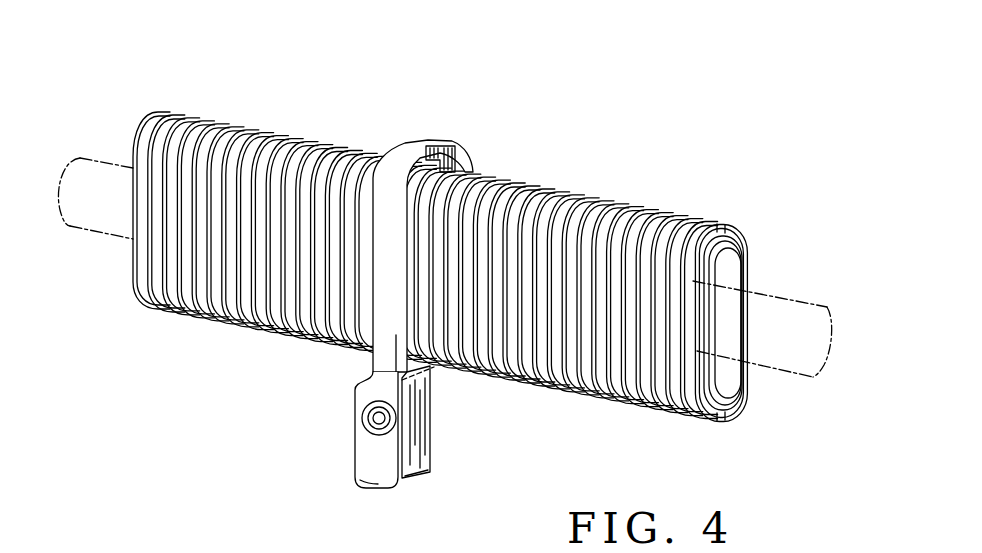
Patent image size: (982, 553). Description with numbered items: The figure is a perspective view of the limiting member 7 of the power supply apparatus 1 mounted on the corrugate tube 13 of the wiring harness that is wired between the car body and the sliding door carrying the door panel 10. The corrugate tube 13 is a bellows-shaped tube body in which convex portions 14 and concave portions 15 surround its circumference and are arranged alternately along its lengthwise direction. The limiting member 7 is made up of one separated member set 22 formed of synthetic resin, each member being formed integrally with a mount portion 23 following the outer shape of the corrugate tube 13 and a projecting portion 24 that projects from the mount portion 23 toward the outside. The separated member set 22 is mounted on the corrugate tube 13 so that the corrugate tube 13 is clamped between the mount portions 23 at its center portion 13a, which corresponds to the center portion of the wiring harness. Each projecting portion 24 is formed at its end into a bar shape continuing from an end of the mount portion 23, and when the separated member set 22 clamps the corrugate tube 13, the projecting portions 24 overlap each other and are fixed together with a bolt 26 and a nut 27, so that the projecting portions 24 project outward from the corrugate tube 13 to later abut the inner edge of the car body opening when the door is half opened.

The coil spring assembly 1 is at (440, 277).
The limiting member 7 is at (408, 285).
The door panel 10 is at (770, 367).
The corrugate tube 13 is at (440, 243).
The center portion of the corrugate tube 13a is at (434, 368).
The convex portions 14 is at (290, 143).
The concave portions 15 is at (566, 272).
The separated member set 22 is at (370, 488).
The mount portion 23 is at (368, 175).
The projecting portion 24 is at (388, 458).
The bolt 26 is at (366, 406).
The nut 27 is at (368, 422).